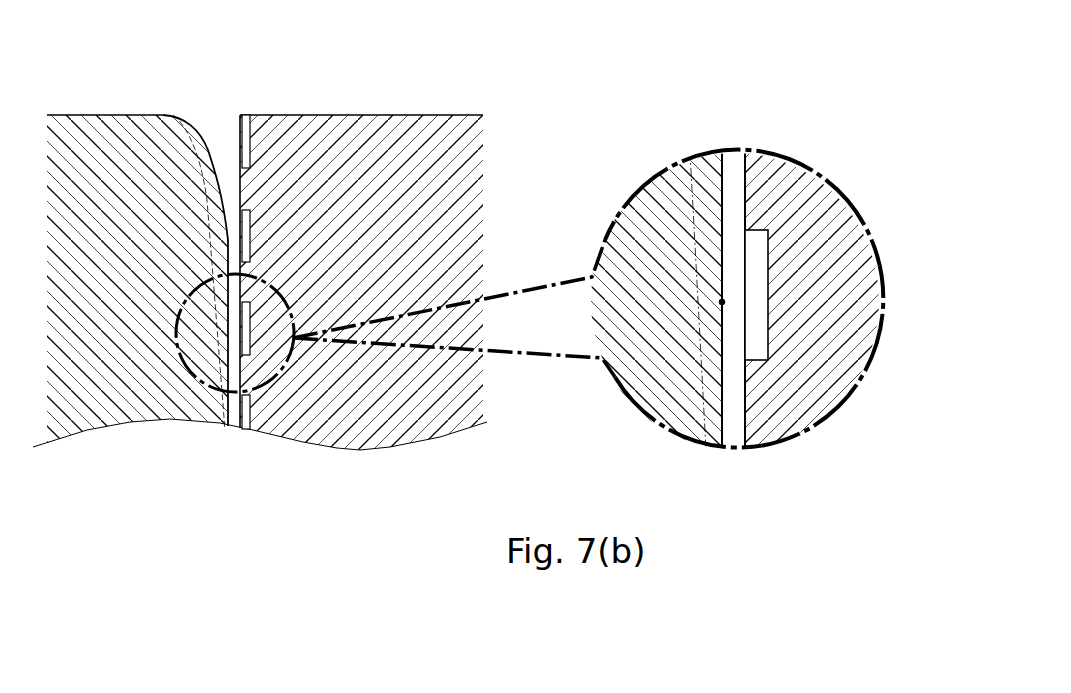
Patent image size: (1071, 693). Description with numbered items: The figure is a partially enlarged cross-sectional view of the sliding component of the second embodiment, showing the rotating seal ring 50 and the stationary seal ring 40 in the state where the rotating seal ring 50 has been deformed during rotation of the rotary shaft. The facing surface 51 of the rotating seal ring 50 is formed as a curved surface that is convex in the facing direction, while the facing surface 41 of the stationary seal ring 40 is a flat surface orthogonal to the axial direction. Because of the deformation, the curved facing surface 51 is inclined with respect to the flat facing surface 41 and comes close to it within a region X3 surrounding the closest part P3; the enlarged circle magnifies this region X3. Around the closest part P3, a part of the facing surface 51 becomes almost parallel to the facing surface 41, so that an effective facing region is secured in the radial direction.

The stationary seal ring 40 is at (386, 150).
The facing surface 41 is at (243, 167).
The rotating seal ring 50 is at (118, 152).
The facing surface 51 is at (233, 223).
The region X3 is at (283, 363).
The closest part P3 is at (722, 302).